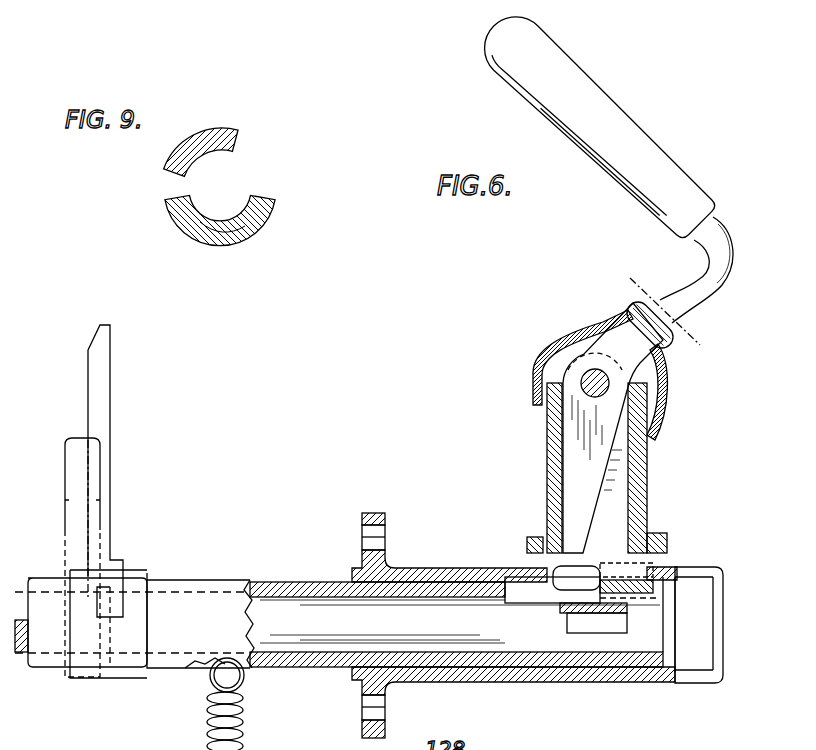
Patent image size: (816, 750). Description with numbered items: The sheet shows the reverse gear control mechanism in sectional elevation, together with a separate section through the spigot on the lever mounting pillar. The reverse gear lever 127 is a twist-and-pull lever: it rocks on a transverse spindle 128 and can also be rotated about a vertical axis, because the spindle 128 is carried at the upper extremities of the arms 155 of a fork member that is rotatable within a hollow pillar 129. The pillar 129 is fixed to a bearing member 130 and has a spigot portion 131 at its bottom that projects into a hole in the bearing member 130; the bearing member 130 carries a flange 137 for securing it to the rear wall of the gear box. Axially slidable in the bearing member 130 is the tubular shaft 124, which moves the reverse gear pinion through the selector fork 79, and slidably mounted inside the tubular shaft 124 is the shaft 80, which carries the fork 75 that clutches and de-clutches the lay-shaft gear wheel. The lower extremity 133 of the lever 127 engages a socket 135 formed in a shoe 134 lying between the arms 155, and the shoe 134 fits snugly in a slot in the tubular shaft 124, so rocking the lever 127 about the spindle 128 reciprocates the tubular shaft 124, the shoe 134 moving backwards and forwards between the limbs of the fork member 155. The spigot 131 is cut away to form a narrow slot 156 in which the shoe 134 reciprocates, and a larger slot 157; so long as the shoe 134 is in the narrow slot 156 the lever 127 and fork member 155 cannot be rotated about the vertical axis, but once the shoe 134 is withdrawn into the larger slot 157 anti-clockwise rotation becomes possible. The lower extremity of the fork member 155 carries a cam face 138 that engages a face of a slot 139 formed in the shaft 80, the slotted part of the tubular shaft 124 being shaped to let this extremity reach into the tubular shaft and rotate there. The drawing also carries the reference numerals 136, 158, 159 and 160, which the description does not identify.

In FIG. 6, the fork 75 is at (88, 372).
In FIG. 6, the selector fork 79 is at (79, 477).
In FIG. 6, the shaft 80 is at (433, 635).
In FIG. 6, the tubular shaft 124 is at (413, 585).
In FIG. 6, the reverse gear lever 127 is at (680, 293).
In FIG. 6, the transverse spindle 128 is at (588, 372).
In FIG. 6, the hollow pillar 129 is at (622, 468).
In FIG. 6, the bearing member 130 is at (455, 567).
In FIG. 9, the spigot portion 131 is at (232, 237).
In FIG. 6, the spigot portion 131 is at (655, 545).
In FIG. 6, the lower extremity 133 is at (540, 548).
In FIG. 6, the shoe 134 is at (606, 562).
In FIG. 6, the socket 135 is at (500, 630).
In FIG. 6, the handle 136 is at (635, 123).
In FIG. 6, the flange 137 is at (372, 513).
In FIG. 6, the cam face 138 is at (618, 635).
In FIG. 6, the slot 139 is at (640, 620).
In FIG. 6, the arms of fork member 155 is at (625, 456).
In FIG. 9, the narrow slot 156 is at (170, 186).
In FIG. 9, the larger slot 157 is at (250, 158).
In FIG. 6, the spring 158 is at (245, 682).
In FIG. 6, the washer 159 is at (207, 659).
In FIG. 6, the sleeve 160 is at (172, 665).